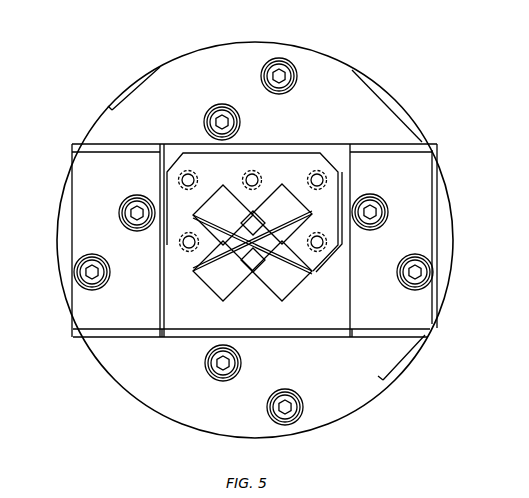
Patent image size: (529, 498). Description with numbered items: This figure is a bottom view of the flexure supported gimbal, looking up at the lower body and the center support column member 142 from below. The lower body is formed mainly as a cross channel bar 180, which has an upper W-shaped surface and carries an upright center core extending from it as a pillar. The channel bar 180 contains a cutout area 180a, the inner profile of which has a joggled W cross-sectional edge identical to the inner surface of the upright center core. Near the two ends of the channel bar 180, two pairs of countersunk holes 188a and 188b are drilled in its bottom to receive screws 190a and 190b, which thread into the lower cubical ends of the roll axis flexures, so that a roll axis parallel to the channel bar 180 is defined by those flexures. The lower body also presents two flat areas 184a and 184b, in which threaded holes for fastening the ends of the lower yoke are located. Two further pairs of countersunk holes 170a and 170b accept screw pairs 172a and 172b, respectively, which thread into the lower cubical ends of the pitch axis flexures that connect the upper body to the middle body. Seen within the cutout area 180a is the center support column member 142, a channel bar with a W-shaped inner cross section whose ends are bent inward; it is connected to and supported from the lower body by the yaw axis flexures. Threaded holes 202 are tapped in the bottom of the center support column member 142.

The center support column member 142 is at (288, 152).
The countersunk holes 170a is at (283, 406).
The countersunk holes 170b is at (226, 116).
The screw pair 172a is at (277, 391).
The screw pair 172b is at (239, 117).
The cross channel bar 180 is at (80, 176).
The cutout area 180a is at (168, 151).
The flat area 184a is at (437, 185).
The flat area 184b is at (72, 292).
The countersunk holes 188a is at (408, 254).
The countersunk holes 188b is at (82, 257).
The screws 190a is at (400, 280).
The screws 190b is at (108, 281).
The threaded holes 202 is at (178, 180).